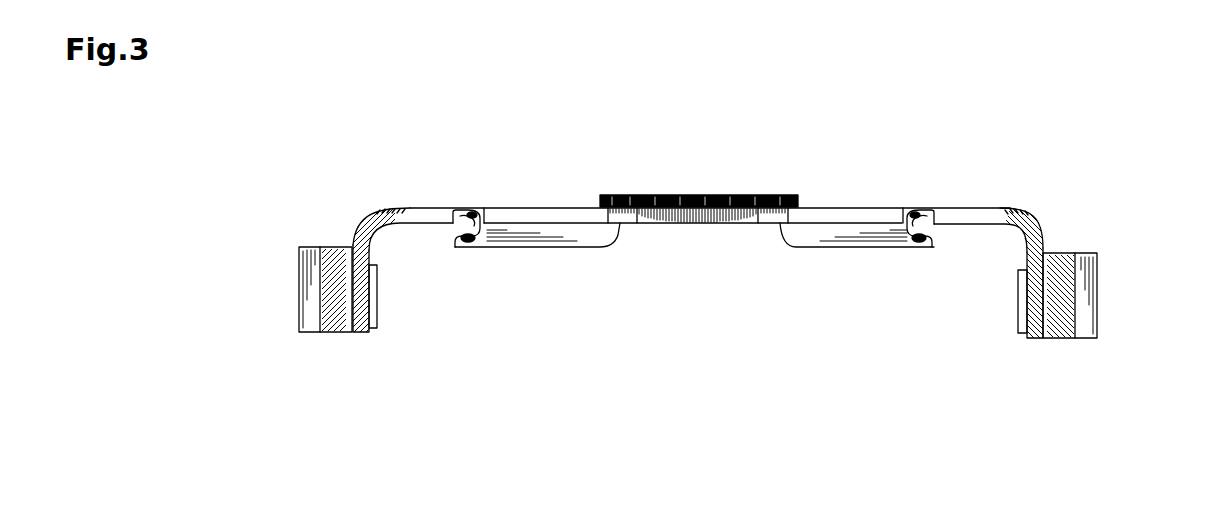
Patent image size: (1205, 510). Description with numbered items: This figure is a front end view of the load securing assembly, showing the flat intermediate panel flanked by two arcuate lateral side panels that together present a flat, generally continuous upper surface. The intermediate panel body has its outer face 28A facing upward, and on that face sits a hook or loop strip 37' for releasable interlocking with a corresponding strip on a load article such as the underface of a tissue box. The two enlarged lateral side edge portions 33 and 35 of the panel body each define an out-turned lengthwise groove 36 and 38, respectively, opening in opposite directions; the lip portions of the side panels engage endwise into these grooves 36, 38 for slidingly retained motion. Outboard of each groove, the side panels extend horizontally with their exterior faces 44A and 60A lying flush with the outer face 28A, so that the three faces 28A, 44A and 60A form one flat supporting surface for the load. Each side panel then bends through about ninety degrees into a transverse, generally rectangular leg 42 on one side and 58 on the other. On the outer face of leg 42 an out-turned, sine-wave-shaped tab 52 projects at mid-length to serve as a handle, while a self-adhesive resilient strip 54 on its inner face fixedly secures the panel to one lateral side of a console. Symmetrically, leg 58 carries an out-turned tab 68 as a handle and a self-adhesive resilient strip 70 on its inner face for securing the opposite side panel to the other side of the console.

The outer face of panel body 28A is at (677, 195).
The enlarged lateral side edge portion 33 is at (492, 217).
The enlarged lateral side edge portion 35 is at (903, 220).
The out-turned lengthwise groove 36 is at (457, 238).
The hook or loop strip 37' is at (713, 155).
The out-turned lengthwise groove 38 is at (945, 230).
The second generally rectangular leg 42 is at (365, 333).
The exterior face of first leg panel body 44A is at (423, 207).
The out-turned tab 52 is at (330, 310).
The self-adhesive resilient strip 54 is at (373, 300).
The second generally rectangular leg 58 is at (1033, 327).
The exterior face of second leg panel body 60A is at (962, 208).
The out-turned tab 68 is at (1063, 292).
The self-adhesive resilient strip 70 is at (1022, 293).